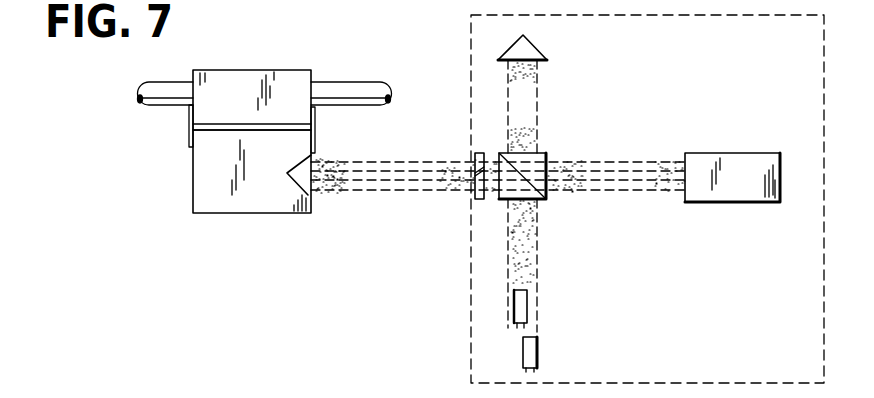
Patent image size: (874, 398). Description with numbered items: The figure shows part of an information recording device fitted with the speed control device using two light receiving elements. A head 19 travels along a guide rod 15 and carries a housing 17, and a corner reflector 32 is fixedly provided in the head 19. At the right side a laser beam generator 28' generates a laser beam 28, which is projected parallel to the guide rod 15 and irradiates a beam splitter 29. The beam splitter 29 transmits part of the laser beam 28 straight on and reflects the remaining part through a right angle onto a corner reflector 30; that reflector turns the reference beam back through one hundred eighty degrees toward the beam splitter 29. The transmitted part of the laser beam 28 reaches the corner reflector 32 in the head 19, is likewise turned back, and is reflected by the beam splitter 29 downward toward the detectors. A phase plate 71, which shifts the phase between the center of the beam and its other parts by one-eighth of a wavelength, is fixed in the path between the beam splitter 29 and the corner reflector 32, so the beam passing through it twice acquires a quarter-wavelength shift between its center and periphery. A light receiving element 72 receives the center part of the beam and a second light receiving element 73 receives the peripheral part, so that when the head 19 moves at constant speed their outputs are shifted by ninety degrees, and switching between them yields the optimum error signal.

The guide rod 15 is at (347, 90).
The housing upper portion 17 is at (247, 68).
The head 19 is at (212, 200).
The corner reflector 32 is at (295, 167).
The laser beam 28 is at (498, 196).
The laser beam generator 28' is at (732, 150).
The beam splitter 29 is at (533, 158).
The corner reflector 30 is at (526, 48).
The phase plate 71 is at (483, 203).
The light receiving element 72 is at (523, 302).
The light receiving element 73 is at (533, 350).